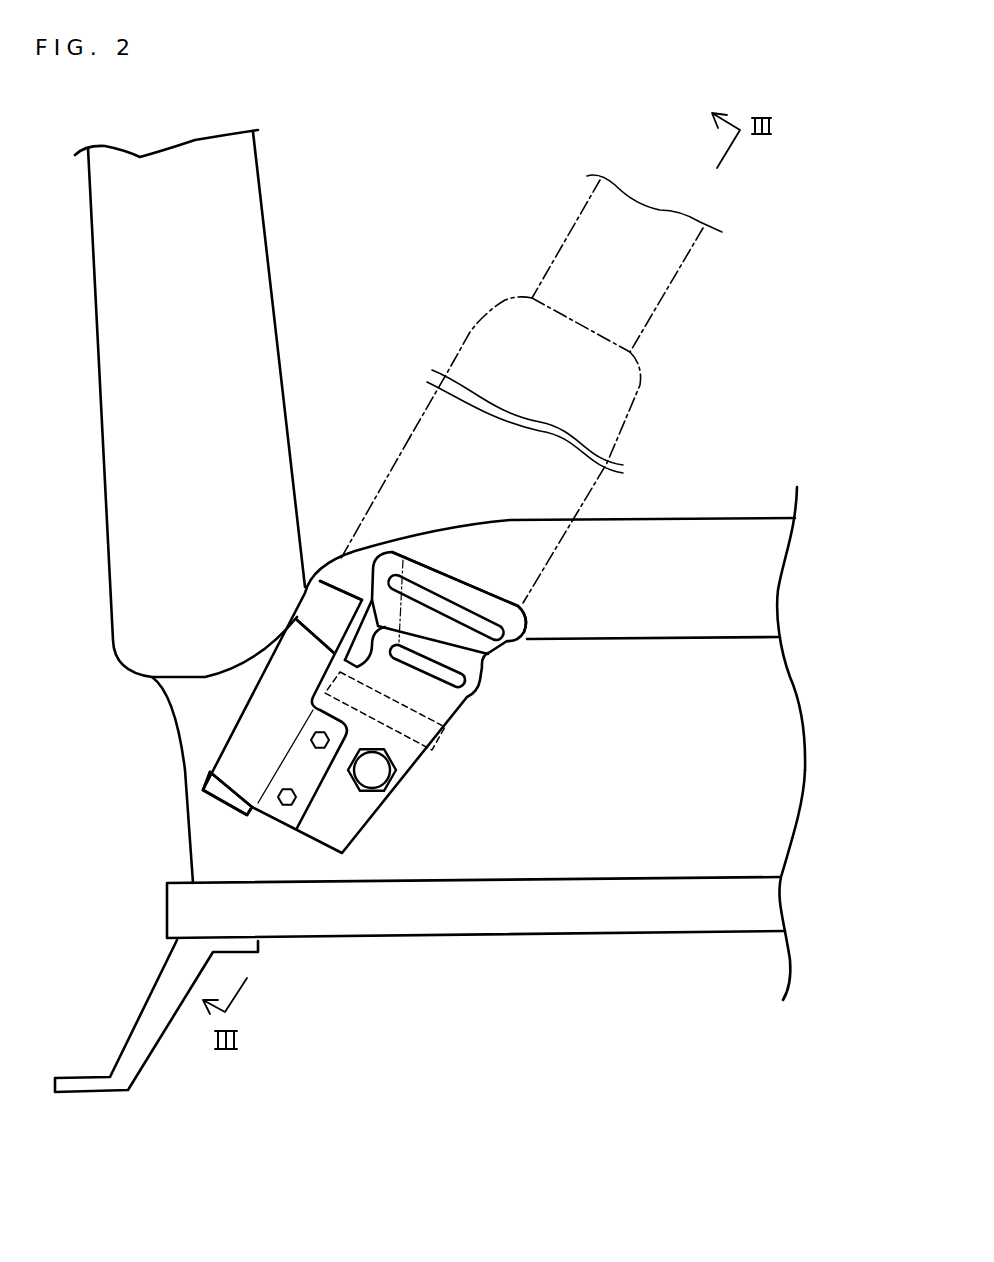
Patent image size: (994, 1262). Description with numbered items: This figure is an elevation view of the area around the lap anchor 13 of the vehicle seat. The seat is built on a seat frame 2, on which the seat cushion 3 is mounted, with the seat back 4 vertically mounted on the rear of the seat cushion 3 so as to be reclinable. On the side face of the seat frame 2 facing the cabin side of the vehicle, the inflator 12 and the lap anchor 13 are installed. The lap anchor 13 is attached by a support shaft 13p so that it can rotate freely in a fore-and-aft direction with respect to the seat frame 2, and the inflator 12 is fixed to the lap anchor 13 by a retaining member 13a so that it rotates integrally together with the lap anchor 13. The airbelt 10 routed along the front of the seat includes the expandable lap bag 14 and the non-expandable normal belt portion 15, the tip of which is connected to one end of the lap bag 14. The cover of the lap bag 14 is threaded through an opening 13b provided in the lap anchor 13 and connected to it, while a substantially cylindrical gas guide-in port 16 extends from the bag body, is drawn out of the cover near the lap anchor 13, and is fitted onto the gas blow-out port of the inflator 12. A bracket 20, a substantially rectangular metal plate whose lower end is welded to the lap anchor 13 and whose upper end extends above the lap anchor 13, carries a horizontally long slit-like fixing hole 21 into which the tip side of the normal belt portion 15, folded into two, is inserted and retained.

The seat frame 2 is at (780, 750).
The seat cushion 3 is at (753, 588).
The seat back 4 is at (122, 355).
The airbelt 10 is at (542, 401).
The inflator 12 is at (313, 618).
The lap anchor 13 is at (351, 750).
The retaining member 13a is at (240, 752).
The opening 13b is at (452, 656).
The support shaft 13p is at (380, 775).
The lap bag 14 is at (557, 500).
The normal belt portion 15 is at (660, 275).
The gas guide-in port 16 is at (330, 565).
The bracket 20 is at (505, 595).
The fixing hole 21 is at (444, 598).